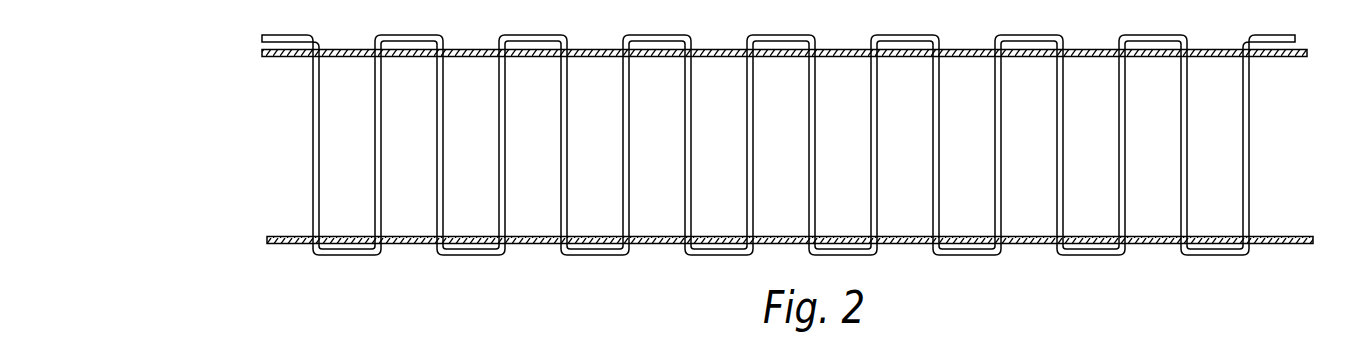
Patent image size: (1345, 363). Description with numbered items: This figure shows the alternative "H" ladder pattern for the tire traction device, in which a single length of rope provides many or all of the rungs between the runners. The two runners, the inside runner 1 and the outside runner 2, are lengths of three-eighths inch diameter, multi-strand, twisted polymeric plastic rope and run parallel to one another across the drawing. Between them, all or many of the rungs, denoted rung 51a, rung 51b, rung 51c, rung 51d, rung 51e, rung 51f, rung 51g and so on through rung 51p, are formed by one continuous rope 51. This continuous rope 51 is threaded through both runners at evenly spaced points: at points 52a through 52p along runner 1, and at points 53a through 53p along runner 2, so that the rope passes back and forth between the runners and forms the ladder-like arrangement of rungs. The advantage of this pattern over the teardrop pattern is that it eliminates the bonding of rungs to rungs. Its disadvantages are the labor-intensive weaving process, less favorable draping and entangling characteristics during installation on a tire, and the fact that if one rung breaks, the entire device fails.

The inside runner 1 is at (473, 49).
The outside runner 2 is at (412, 245).
The continuous rope 51 is at (249, 156).
The rung 51a is at (313, 104).
The rung 51b is at (375, 104).
The rung 51c is at (437, 104).
The rung 51d is at (499, 104).
The rung 51e is at (561, 104).
The rung 51f is at (623, 104).
The rung 51g is at (685, 104).
The rung 51p is at (1250, 104).
The threading point on runner 1 52a is at (301, 65).
The threading point on runner 1 52p is at (1269, 65).
The threading point on runner 2 53a is at (299, 230).
The threading point on runner 2 53p is at (1271, 229).